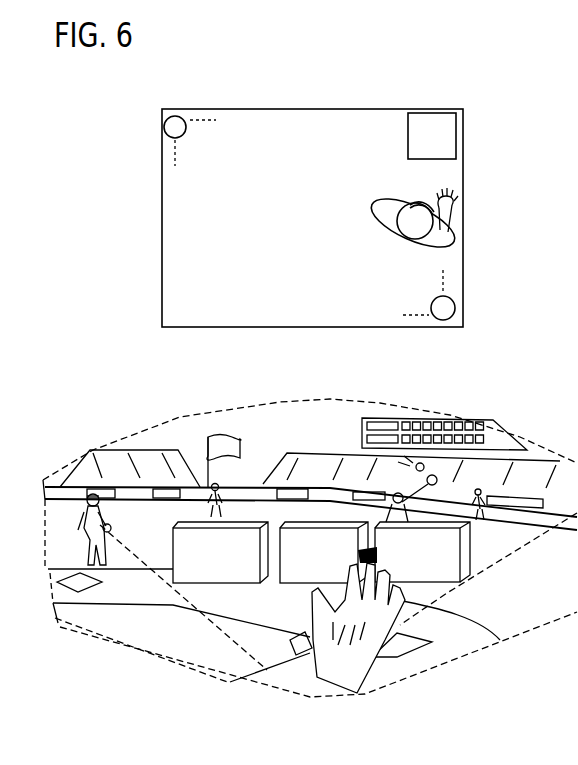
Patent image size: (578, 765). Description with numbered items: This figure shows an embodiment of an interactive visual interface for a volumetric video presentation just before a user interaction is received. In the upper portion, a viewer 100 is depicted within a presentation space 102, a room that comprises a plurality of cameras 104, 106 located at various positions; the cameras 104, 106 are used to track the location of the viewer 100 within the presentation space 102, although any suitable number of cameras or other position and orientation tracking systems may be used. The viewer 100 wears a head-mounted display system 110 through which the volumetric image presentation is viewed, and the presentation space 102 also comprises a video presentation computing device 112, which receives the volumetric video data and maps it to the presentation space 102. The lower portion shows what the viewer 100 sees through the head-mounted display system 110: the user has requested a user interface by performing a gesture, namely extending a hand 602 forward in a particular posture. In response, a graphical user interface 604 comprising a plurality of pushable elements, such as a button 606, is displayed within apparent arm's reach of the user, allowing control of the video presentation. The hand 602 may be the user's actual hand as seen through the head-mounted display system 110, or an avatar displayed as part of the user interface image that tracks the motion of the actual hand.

The viewer 100 is at (397, 218).
The presentation space 102 is at (319, 118).
The camera 104 is at (186, 131).
The camera 106 is at (431, 303).
The head-mounted display system 110 is at (413, 203).
The video presentation computing device 112 is at (444, 148).
The hand 602 is at (356, 668).
The graphical user interface 604 is at (310, 542).
The button 606 is at (434, 588).